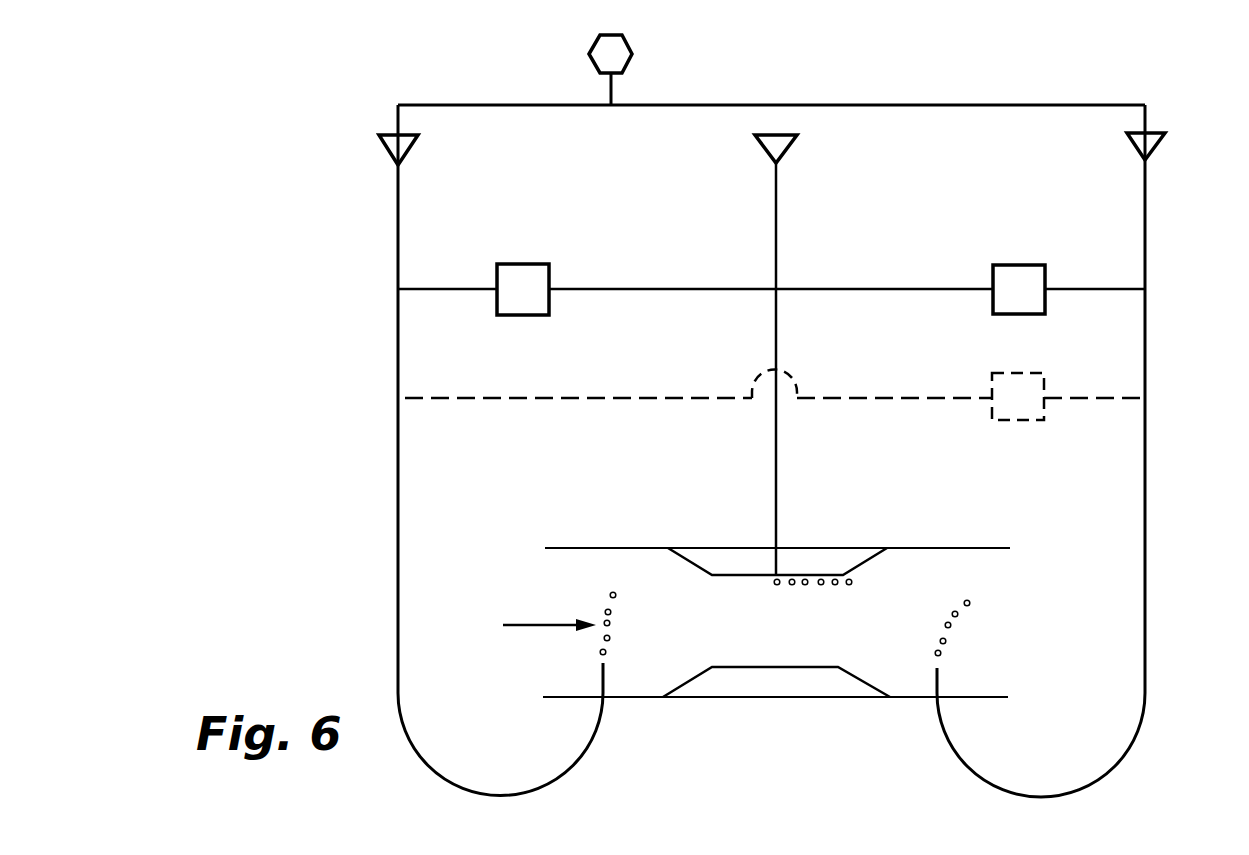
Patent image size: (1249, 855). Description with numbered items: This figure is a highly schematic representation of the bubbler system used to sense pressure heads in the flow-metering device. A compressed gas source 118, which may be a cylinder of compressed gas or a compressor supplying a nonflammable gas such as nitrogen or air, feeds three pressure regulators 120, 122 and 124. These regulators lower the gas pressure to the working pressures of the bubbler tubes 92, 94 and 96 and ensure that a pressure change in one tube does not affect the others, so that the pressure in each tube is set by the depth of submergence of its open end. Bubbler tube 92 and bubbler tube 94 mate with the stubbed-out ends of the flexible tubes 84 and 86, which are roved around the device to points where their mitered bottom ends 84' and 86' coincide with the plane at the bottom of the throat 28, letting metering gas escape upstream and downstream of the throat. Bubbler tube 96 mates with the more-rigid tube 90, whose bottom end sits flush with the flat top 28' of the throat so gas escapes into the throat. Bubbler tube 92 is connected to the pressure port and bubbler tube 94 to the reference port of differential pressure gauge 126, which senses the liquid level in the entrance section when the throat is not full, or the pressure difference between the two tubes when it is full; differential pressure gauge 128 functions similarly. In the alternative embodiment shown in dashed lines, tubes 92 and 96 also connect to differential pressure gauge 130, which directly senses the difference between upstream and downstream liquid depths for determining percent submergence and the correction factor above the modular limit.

The compressed gas source 118 is at (632, 60).
The pressure regulator 120 is at (416, 140).
The pressure regulator 122 is at (792, 142).
The pressure regulator 124 is at (1162, 140).
The differential pressure gauge 126 is at (538, 264).
The differential pressure gauge 128 is at (1030, 265).
The differential pressure gauge 130 is at (1046, 390).
The bubbler tube 96 is at (778, 486).
The third more-rigid tube 90 is at (779, 563).
The top of the throat section 28' is at (794, 597).
The throat 28 is at (776, 663).
The flexible tube 84 is at (527, 729).
The bottom end of tube 84' is at (640, 633).
The flexible tube 86 is at (1015, 732).
The bottom end of tube 86' is at (976, 638).
The bubbler tube 92 is at (400, 528).
The bubbler tube 94 is at (1147, 500).